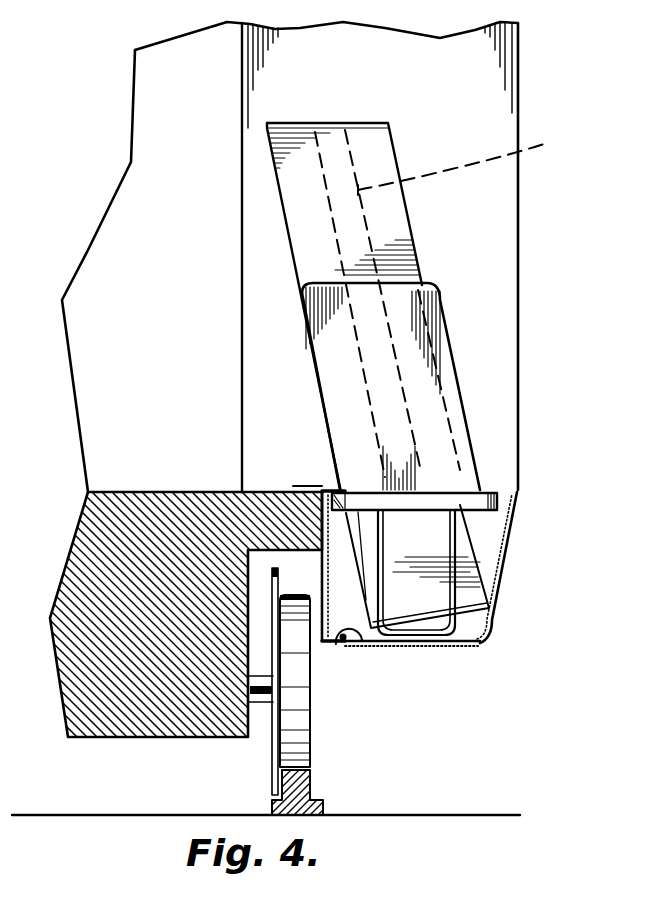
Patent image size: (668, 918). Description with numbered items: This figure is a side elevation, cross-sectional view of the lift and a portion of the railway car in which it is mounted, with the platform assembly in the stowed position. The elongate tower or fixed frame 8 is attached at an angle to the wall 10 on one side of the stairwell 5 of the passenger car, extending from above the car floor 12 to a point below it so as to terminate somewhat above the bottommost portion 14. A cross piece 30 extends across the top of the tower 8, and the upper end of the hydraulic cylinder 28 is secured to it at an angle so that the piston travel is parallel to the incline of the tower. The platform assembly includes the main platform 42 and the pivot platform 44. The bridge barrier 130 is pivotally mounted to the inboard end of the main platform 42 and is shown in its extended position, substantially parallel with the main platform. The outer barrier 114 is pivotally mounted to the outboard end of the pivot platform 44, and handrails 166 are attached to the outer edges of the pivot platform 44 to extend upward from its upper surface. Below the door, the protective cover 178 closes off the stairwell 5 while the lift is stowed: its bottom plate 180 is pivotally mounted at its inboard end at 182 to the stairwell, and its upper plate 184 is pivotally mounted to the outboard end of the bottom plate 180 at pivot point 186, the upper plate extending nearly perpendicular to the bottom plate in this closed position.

The wall 10 is at (480, 95).
The cross piece 30 is at (300, 123).
The hydraulic cylinder 28 is at (471, 156).
The tower 8 is at (420, 219).
The car floor 12 is at (260, 497).
The bridge barrier 130 is at (293, 497).
The main platform 42 is at (355, 497).
The pivotal mounting 182 is at (332, 648).
The bottom plate 180 is at (448, 647).
The protective cover 178 is at (486, 643).
The upper plate 184 is at (515, 538).
The pivot point 186 is at (505, 603).
The pivot platform 44 is at (500, 497).
The handrails 166 is at (437, 570).
The outer barrier 114 is at (363, 530).
The bottommost portion 14 is at (335, 640).
The stairwell 5 is at (337, 577).